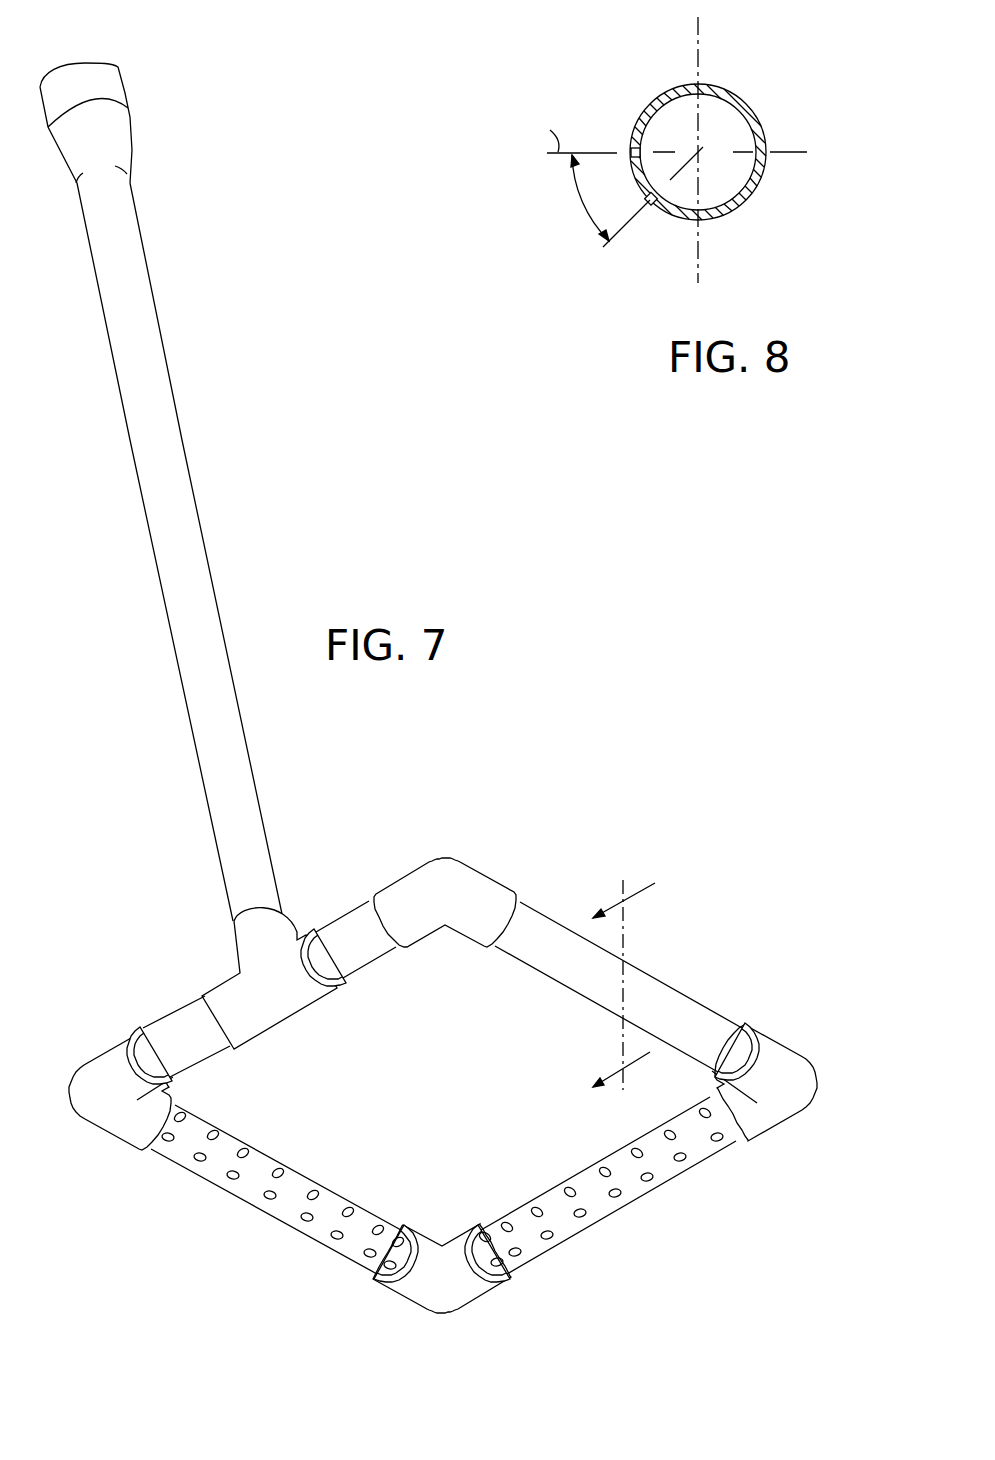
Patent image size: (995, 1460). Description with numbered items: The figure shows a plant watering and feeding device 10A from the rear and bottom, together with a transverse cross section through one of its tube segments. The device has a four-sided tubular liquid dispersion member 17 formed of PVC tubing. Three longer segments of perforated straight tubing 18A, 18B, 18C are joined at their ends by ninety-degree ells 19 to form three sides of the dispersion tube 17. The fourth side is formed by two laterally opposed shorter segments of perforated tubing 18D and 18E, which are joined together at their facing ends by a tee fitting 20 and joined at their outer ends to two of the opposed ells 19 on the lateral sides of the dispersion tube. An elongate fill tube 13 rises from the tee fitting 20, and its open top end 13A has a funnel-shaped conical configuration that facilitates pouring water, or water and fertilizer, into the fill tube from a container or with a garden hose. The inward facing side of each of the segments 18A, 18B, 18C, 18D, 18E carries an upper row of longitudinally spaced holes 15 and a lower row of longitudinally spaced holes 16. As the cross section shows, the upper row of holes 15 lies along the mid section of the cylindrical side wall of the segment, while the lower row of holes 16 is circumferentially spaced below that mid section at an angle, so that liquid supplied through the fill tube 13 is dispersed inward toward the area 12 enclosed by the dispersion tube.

In FIG. 7, the plant watering and feeding device 10A is at (557, 725).
In FIG. 7, the frame interior area 12 is at (440, 1088).
In FIG. 7, the fill tube 13 is at (195, 452).
In FIG. 7, the open top end 13A is at (102, 60).
In FIG. 7, the upper row of holes 15 is at (244, 1152).
In FIG. 8, the upper row of holes 15 is at (632, 152).
In FIG. 7, the lower row of holes 16 is at (233, 1176).
In FIG. 8, the lower row of holes 16 is at (655, 200).
In FIG. 7, the tubular liquid dispersion member 17 is at (672, 983).
In FIG. 8, the tubular liquid dispersion member 17 is at (747, 80).
In FIG. 7, the perforated straight tubing segment 18A is at (627, 1208).
In FIG. 7, the perforated straight tubing segment 18B is at (705, 1013).
In FIG. 8, the perforated straight tubing segment 18B is at (755, 117).
In FIG. 7, the perforated straight tubing segment 18C is at (243, 1197).
In FIG. 7, the shorter segment of perforated tubing 18D is at (347, 918).
In FIG. 7, the shorter segment of perforated tubing 18E is at (172, 1013).
In FIG. 7, the 90° ell 19 is at (463, 866).
In FIG. 7, the tee fitting 20 is at (248, 943).